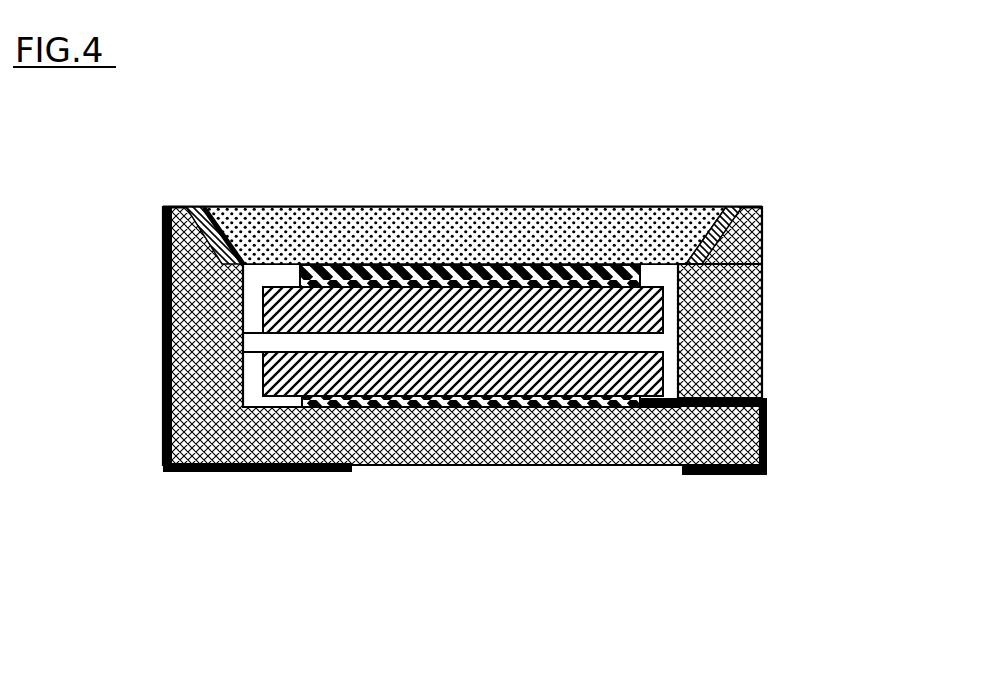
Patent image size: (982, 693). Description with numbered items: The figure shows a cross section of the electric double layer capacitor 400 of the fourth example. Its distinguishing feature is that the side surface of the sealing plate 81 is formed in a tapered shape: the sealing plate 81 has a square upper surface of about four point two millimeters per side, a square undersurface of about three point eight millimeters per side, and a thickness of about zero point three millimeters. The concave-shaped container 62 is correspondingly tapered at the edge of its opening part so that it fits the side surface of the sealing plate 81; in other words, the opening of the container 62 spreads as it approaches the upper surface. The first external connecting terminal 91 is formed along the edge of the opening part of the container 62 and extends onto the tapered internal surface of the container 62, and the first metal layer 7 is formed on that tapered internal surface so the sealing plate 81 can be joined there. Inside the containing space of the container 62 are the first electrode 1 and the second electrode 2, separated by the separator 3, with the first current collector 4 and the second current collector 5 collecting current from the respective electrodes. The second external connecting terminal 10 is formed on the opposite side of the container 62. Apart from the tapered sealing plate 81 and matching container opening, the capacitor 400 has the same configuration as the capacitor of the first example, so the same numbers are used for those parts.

The first electrode 1 is at (270, 322).
The second electrode 2 is at (268, 383).
The separator 3 is at (657, 342).
The first current collector 4 is at (320, 264).
The second current collector 5 is at (405, 407).
The first metal layer 7 is at (202, 210).
The second external connecting terminal 10 is at (765, 442).
The concave-shaped container 62 is at (268, 446).
The sealing plate 81 is at (487, 237).
The first external connecting terminal 91 is at (164, 468).
The electric double layer capacitor 400 is at (592, 598).